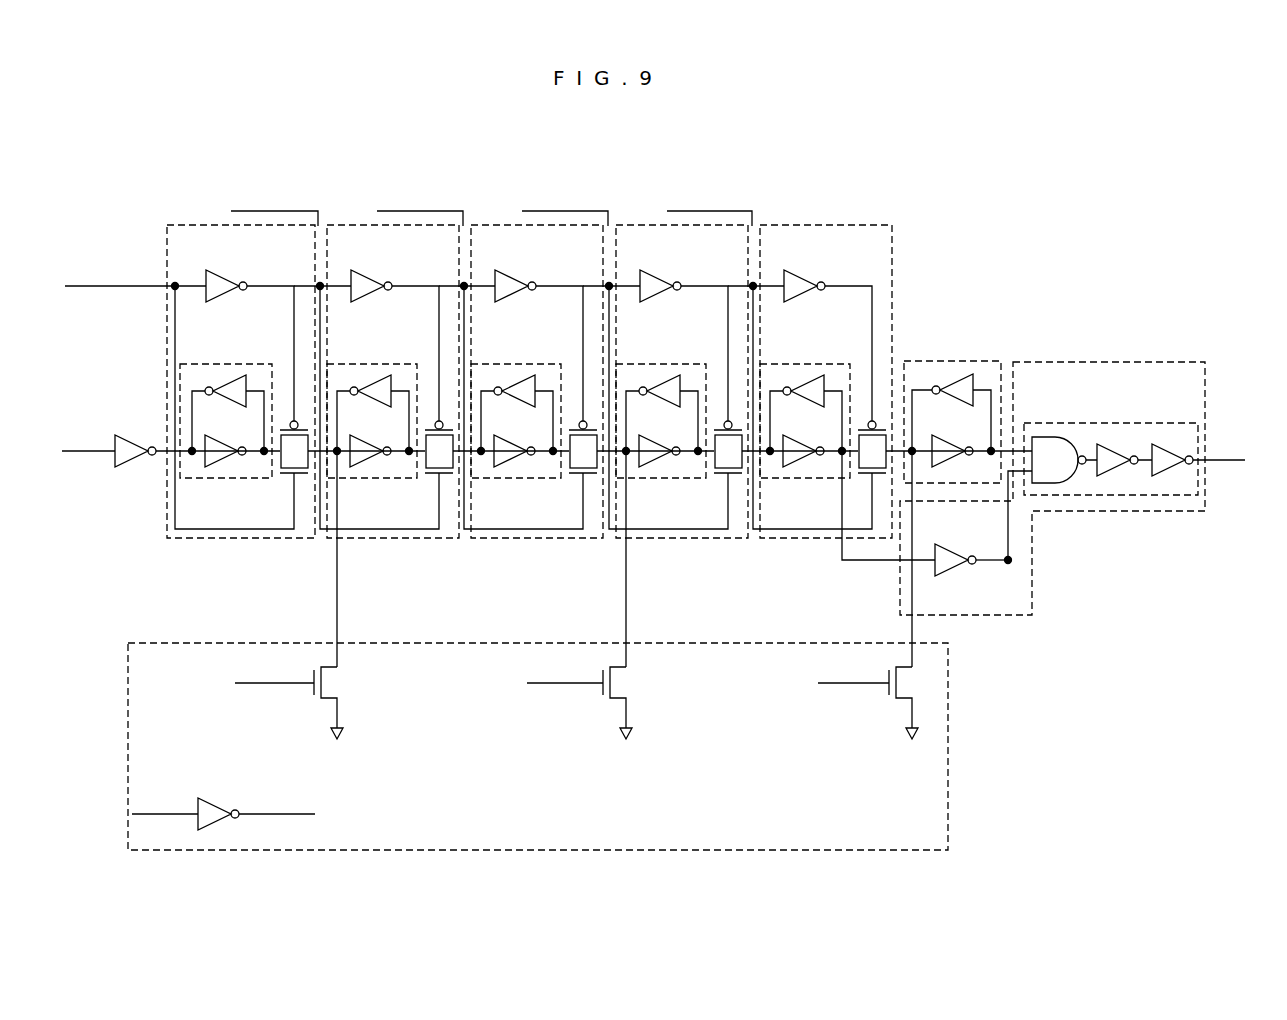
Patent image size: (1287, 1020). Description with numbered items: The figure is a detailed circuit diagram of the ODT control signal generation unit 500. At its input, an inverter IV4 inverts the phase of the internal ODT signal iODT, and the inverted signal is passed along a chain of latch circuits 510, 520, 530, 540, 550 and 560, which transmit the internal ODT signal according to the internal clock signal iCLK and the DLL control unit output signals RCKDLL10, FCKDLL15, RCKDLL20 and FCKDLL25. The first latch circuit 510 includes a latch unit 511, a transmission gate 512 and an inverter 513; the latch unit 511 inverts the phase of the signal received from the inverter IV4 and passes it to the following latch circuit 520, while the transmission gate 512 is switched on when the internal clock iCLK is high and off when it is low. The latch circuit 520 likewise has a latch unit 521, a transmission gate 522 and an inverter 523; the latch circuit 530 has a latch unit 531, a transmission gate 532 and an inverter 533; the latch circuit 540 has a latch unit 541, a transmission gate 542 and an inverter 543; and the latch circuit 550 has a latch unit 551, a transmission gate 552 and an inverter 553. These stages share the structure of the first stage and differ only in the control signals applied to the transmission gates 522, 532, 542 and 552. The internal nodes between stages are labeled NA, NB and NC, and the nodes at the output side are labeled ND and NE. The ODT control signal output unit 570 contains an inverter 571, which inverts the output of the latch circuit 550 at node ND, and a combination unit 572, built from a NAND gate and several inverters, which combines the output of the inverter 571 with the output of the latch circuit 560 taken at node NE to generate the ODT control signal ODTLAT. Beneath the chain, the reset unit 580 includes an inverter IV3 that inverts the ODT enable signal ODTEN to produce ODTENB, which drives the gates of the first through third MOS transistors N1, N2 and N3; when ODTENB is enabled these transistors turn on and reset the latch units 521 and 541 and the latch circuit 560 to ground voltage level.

The ODT control signal generation unit 500 is at (1014, 111).
The latch circuit 510 is at (241, 363).
The latch unit 511 is at (228, 364).
The transmission gate 512 is at (283, 473).
The inverter 513 is at (222, 277).
The latch circuit 520 is at (388, 363).
The latch unit 521 is at (373, 364).
The transmission gate 522 is at (428, 473).
The inverter 523 is at (367, 277).
The latch circuit 530 is at (532, 363).
The latch unit 531 is at (517, 364).
The transmission gate 532 is at (572, 473).
The inverter 533 is at (511, 277).
The latch circuit 540 is at (677, 363).
The latch unit 541 is at (662, 364).
The transmission gate 542 is at (717, 473).
The inverter 543 is at (656, 277).
The latch circuit 550 is at (821, 363).
The latch unit 551 is at (806, 364).
The transmission gate 552 is at (861, 473).
The inverter 553 is at (800, 277).
The latch circuit 560 is at (953, 360).
The ODT control signal output unit 570 is at (1072, 460).
The inverter 571 is at (951, 571).
The combination unit 572 is at (1108, 422).
The reset unit 580 is at (583, 746).
The inverter IV3 is at (216, 805).
The inverter IV4 is at (140, 433).
The first MOS transistor N1 is at (297, 699).
The second MOS transistor N2 is at (587, 699).
The third MOS transistor N3 is at (876, 699).
The node NA is at (339, 456).
The node NB is at (483, 456).
The node NC is at (628, 456).
The node ND is at (1005, 558).
The node NE is at (994, 448).